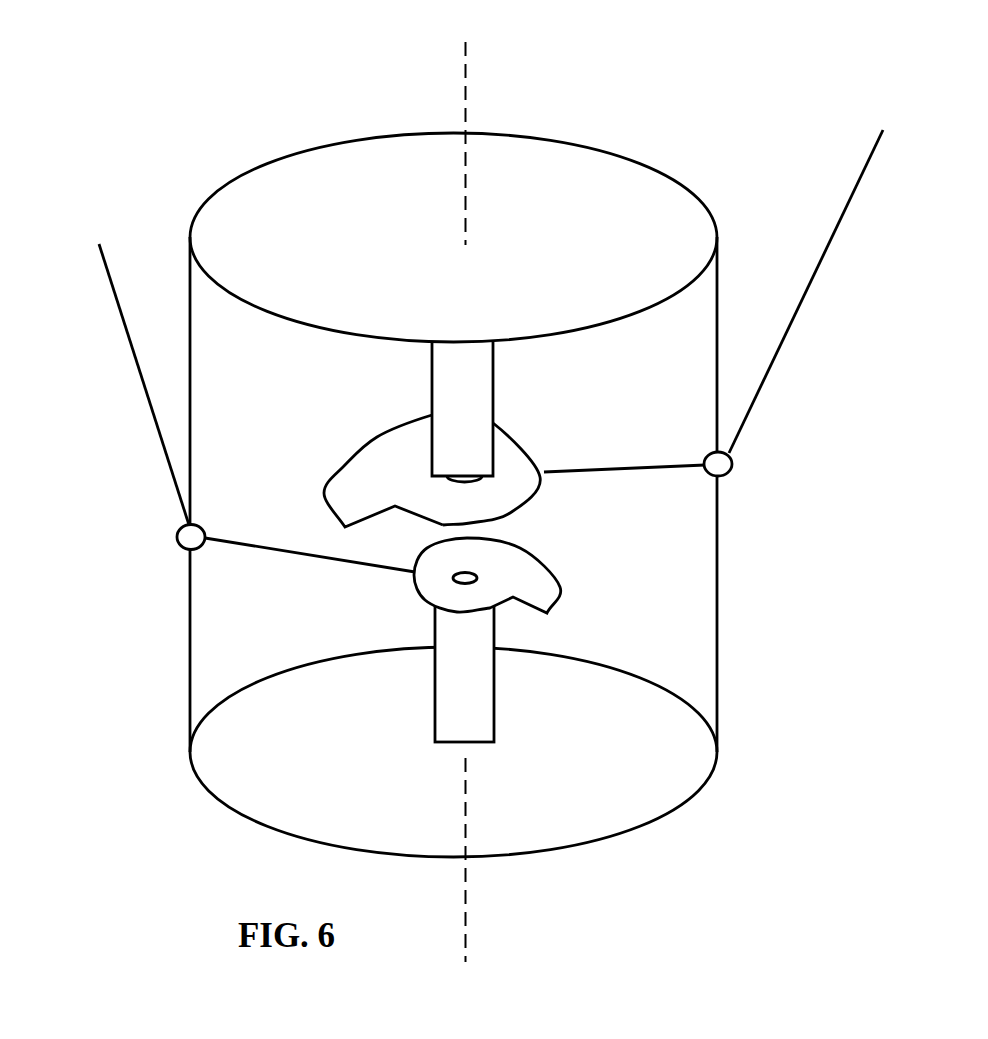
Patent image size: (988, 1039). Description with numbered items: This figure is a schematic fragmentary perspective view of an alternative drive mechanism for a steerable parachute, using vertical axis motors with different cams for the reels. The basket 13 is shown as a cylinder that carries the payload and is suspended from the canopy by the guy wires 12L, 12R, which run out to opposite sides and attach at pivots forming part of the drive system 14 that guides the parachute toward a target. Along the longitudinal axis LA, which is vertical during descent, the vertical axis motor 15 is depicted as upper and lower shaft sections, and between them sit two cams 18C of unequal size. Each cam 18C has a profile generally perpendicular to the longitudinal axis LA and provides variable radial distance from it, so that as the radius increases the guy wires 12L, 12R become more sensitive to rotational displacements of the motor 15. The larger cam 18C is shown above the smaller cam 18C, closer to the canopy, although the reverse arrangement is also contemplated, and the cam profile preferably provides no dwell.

The guy wire 12L is at (141, 374).
The guy wire 12R is at (806, 296).
The basket 13 is at (189, 657).
The drive system 14 is at (110, 559).
The motor 15 is at (466, 368).
The cam 18C is at (538, 492).
The longitudinal axis LA is at (463, 503).